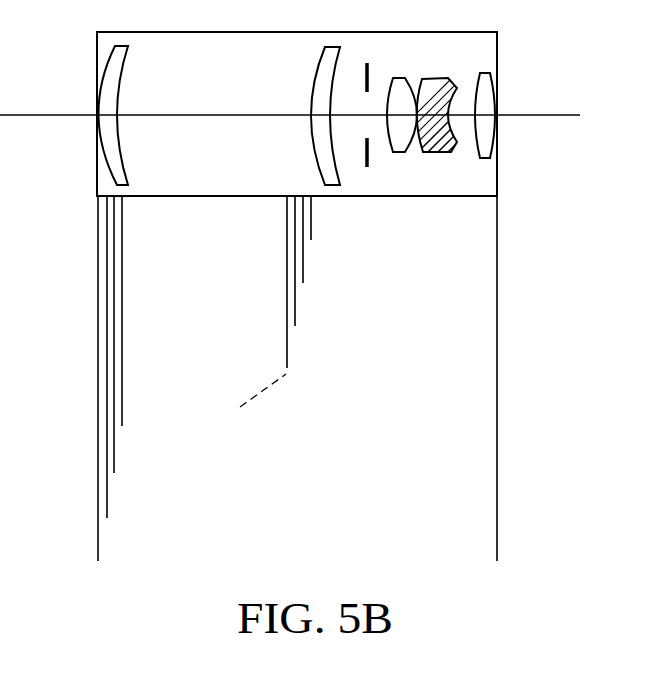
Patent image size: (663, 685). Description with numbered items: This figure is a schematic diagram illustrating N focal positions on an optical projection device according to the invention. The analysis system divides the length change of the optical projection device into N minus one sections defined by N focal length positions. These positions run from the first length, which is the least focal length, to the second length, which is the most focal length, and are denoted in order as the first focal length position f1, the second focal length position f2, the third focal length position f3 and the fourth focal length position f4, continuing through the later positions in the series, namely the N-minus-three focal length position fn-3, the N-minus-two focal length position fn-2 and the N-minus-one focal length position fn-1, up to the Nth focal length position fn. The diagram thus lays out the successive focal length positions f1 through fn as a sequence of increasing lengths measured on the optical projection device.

The first focal length position f1 is at (497, 237).
The second focal length position f2 is at (497, 280).
The third focal length position f3 is at (497, 323).
The fourth focal length position f4 is at (497, 365).
The (N-3)th focal length position fn-3 is at (497, 423).
The (N-2)th focal length position fn-2 is at (497, 470).
The (N-1)th focal length position fn-1 is at (497, 515).
The Nth focal length position fn is at (497, 558).